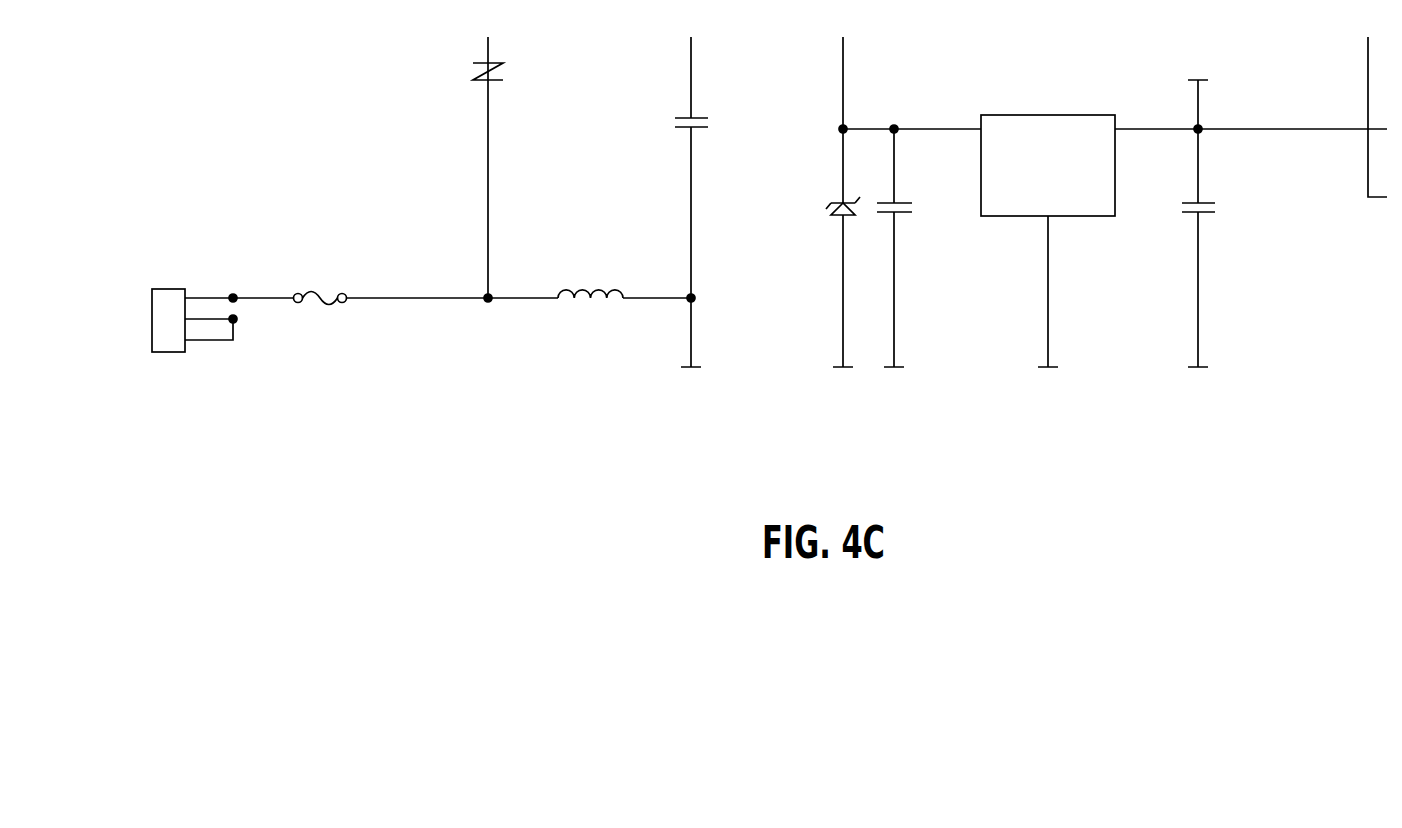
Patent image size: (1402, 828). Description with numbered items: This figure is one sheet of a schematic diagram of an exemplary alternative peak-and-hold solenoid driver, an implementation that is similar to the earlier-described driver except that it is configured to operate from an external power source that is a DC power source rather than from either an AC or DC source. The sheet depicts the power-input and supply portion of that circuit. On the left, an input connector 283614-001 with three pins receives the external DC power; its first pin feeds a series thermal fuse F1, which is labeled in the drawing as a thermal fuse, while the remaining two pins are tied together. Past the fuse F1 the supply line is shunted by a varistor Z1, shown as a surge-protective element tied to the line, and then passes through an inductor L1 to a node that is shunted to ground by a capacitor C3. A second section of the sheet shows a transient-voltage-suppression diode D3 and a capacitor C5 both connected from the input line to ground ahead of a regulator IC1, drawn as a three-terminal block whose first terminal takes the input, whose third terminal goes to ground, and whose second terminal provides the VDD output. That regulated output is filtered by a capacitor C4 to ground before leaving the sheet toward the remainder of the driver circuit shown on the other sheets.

The connector 283614-001 is at (203, 328).
The thermal fuse F1 is at (360, 314).
The varistor Z1 is at (555, 169).
The inductor L1 is at (589, 299).
The capacitor C3 is at (620, 216).
The TVS diode D3 is at (810, 216).
The capacitor C5 is at (958, 260).
The voltage regulator IC1 is at (1171, 228).
The capacitor C4 is at (1283, 224).